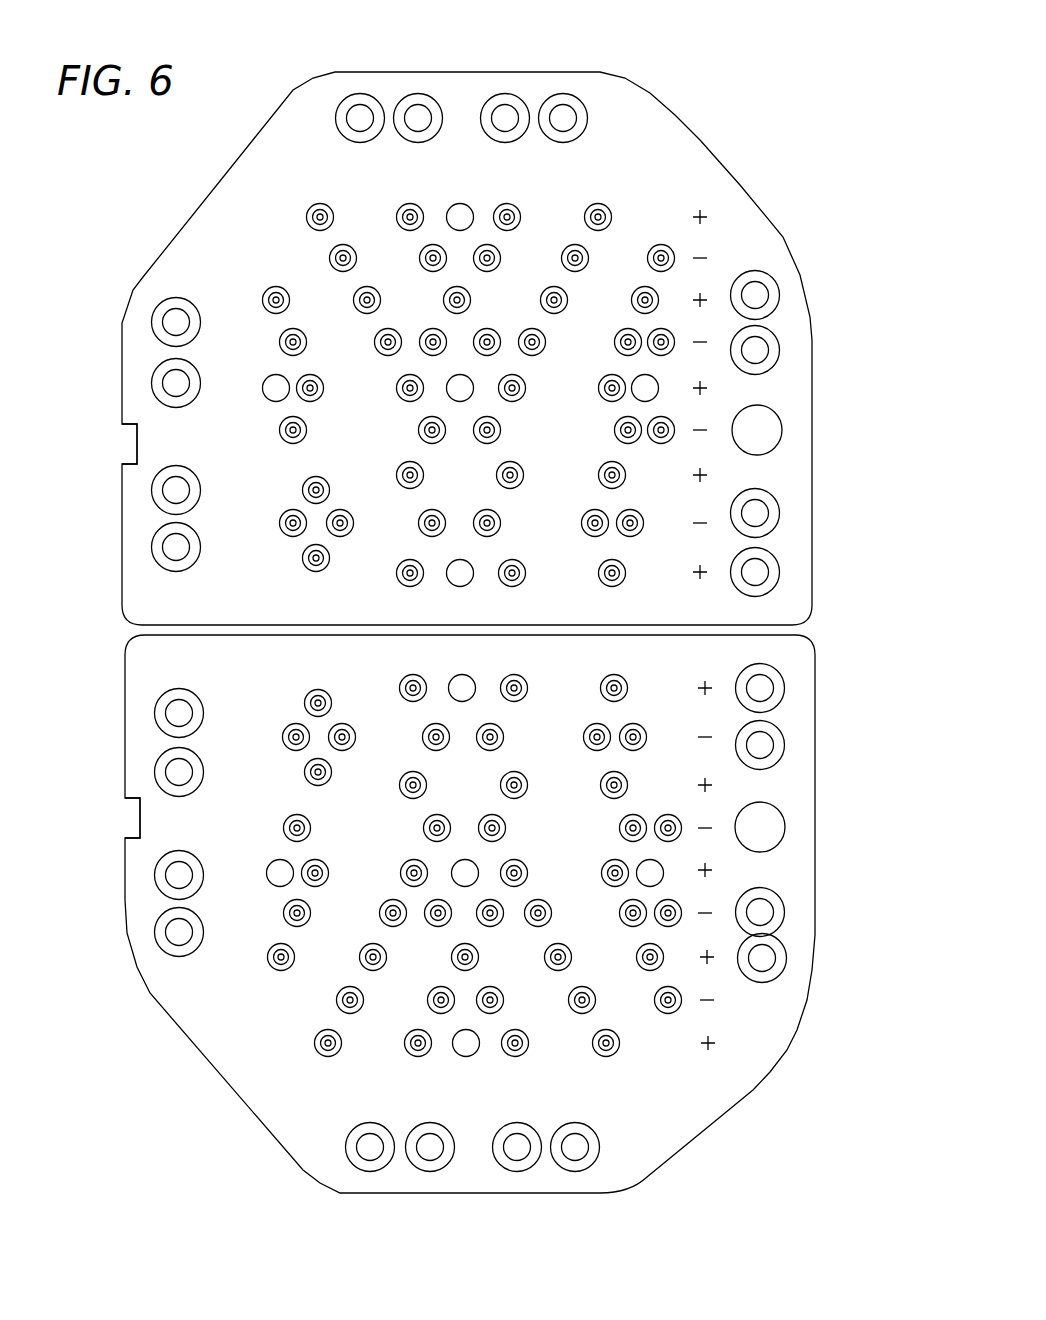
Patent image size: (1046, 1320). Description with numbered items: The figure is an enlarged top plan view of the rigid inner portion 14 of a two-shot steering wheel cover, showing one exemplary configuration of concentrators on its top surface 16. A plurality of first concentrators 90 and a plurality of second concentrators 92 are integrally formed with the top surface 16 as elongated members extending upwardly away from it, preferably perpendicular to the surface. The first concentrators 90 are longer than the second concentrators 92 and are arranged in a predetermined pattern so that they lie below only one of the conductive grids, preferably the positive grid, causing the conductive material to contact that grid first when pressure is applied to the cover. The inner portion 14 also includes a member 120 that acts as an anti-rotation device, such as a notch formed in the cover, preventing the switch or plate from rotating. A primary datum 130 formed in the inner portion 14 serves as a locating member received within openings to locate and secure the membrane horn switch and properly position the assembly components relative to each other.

The rigid inner portion 14 is at (830, 480).
The top surface 16 is at (677, 153).
The first concentrators 90 is at (658, 397).
The second concentrators 92 is at (625, 682).
The member 120 is at (130, 463).
The primary datum 130 is at (758, 452).